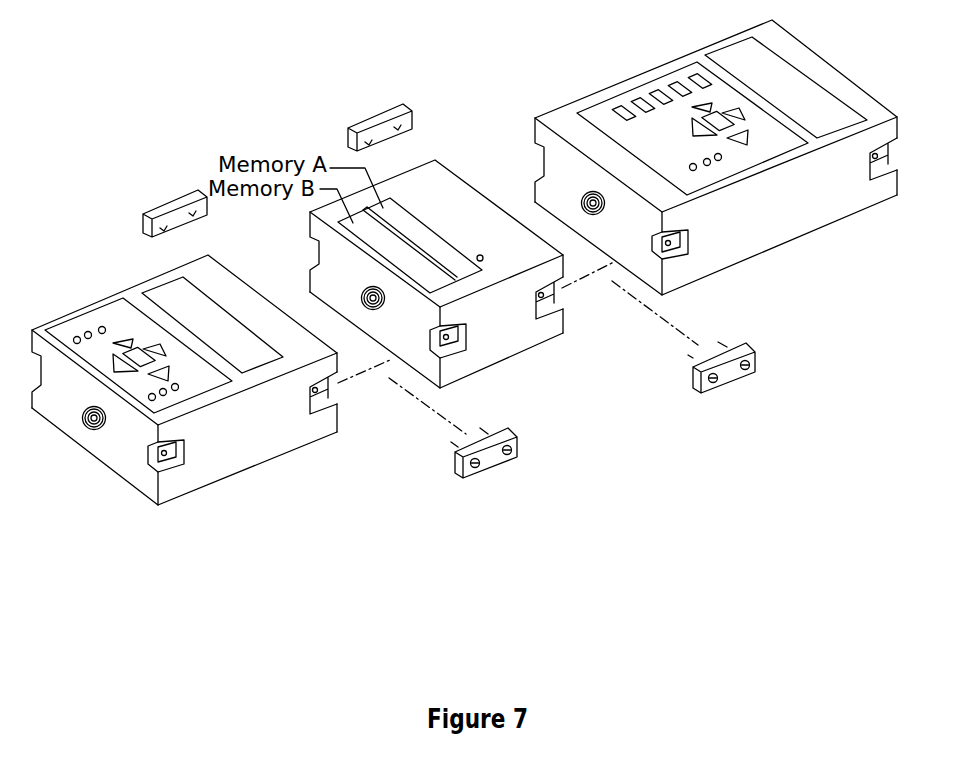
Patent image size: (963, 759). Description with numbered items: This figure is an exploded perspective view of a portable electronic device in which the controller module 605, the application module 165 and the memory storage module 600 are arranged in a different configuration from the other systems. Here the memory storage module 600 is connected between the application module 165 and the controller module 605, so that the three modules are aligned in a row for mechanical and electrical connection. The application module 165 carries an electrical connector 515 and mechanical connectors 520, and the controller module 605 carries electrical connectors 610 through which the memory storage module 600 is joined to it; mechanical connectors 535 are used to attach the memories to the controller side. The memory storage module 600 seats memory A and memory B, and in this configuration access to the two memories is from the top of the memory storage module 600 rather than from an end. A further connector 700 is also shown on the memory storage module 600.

The application module 165 is at (737, 237).
The electrical connector 515 is at (597, 217).
The mechanical connectors 520 is at (160, 207).
The mechanical connectors 535 is at (492, 458).
The memory storage module 600 is at (492, 343).
The controller module 605 is at (237, 450).
The electrical connectors 610 is at (97, 430).
The power connector port 700 is at (377, 313).